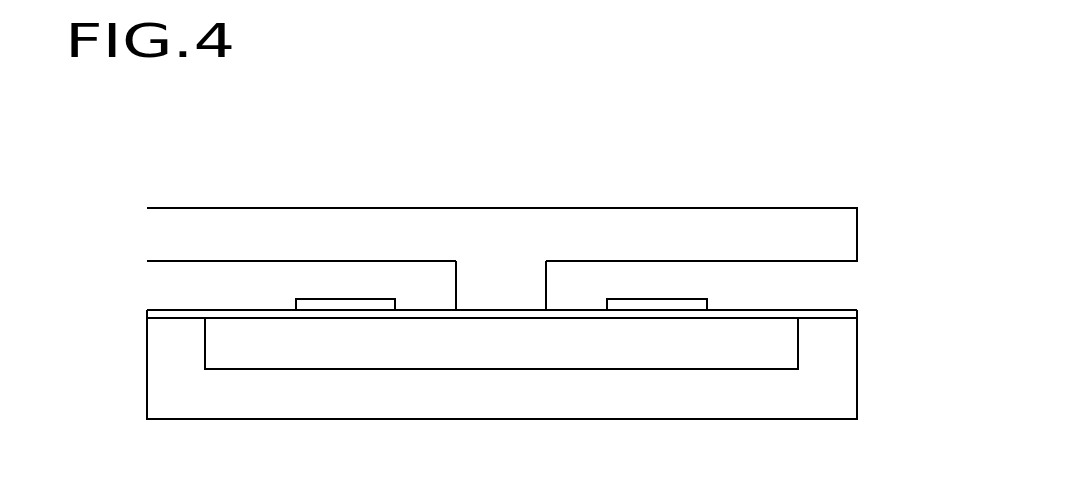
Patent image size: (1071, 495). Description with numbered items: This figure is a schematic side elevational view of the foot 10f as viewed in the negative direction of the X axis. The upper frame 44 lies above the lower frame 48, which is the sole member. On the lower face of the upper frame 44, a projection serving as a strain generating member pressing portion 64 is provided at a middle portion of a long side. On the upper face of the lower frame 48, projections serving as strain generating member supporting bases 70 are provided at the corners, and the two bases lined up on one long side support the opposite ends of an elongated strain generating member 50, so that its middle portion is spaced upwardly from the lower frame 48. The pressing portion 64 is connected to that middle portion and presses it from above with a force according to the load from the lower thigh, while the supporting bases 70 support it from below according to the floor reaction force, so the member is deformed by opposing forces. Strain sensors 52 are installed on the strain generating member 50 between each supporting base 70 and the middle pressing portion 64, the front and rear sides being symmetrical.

The foot 10f is at (841, 147).
The upper frame 44 is at (838, 236).
The lower frame 48 is at (700, 407).
The strain generating member 50 is at (758, 313).
The strain sensor 52 is at (335, 303).
The strain generating member pressing portion 64 is at (528, 281).
The strain generating member supporting base 70 is at (165, 341).